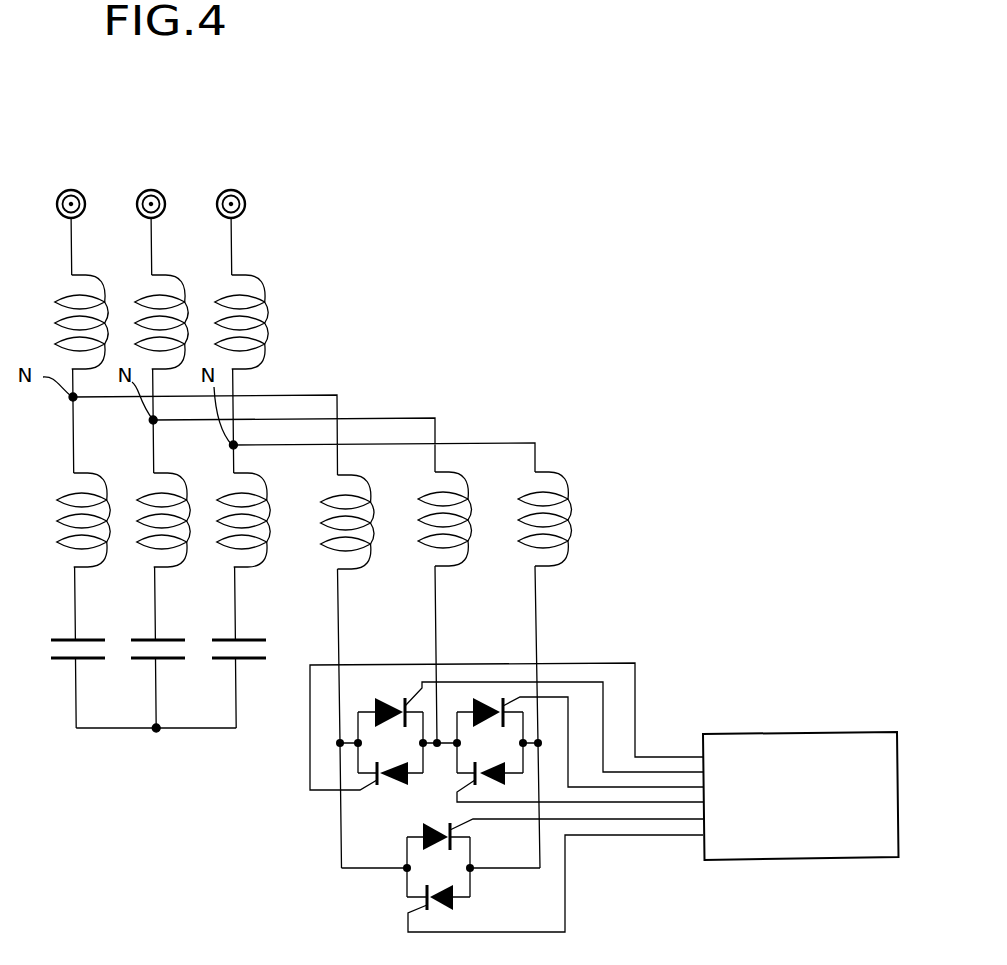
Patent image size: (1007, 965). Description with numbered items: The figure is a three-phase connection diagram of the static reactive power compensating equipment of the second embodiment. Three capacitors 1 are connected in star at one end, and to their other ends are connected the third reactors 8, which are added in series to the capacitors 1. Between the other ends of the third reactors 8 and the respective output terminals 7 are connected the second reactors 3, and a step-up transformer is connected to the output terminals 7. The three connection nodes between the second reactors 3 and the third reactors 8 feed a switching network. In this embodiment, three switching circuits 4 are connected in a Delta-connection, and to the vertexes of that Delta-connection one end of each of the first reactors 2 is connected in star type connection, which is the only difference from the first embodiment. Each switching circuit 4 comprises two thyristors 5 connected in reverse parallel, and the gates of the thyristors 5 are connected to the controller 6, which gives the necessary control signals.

The capacitor 1 is at (164, 625).
The first reactor 2 is at (454, 505).
The second reactor 3 is at (163, 303).
The switching circuit 4 is at (437, 768).
The thyristor 5 is at (448, 766).
The controller circuit 6 is at (798, 734).
The output terminal 7 is at (156, 176).
The third reactor 8 is at (176, 498).